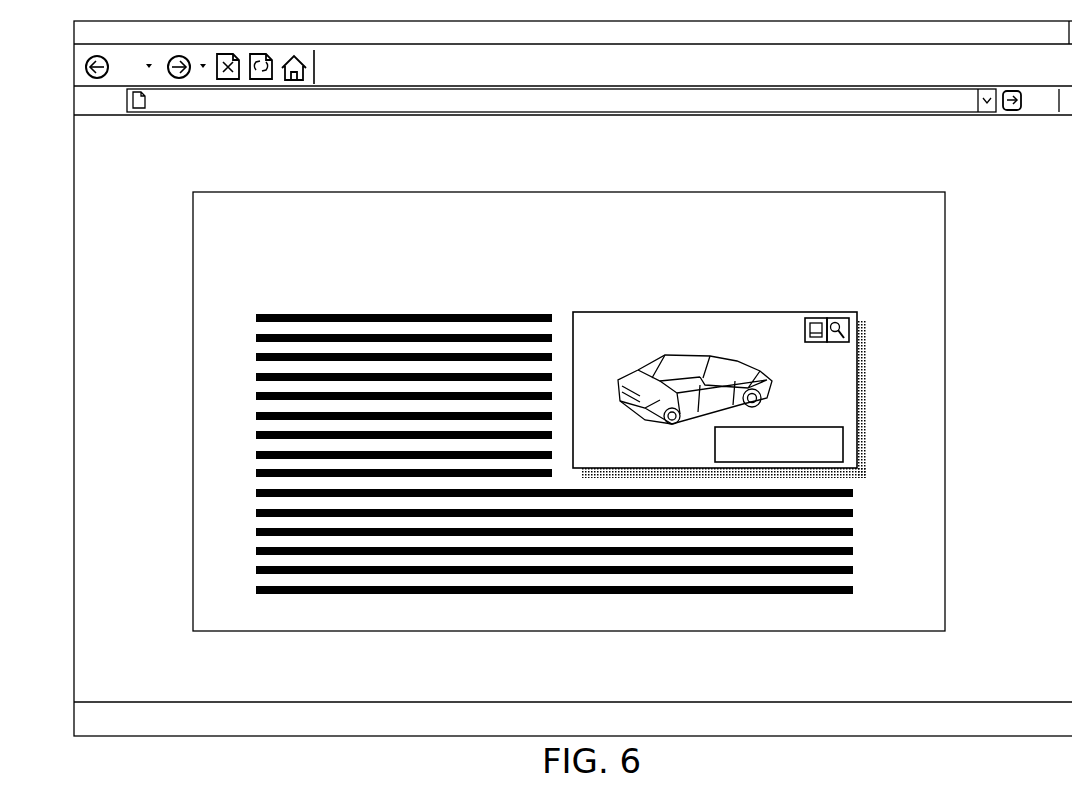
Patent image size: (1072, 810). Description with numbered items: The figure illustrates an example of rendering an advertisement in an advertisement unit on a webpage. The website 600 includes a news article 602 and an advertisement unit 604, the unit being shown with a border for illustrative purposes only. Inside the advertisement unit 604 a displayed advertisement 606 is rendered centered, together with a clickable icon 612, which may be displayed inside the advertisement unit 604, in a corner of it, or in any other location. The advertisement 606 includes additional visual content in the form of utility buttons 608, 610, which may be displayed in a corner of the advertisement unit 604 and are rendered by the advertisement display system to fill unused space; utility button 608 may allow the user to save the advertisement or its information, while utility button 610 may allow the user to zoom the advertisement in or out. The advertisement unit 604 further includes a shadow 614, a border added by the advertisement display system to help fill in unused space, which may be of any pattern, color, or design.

The website 600 is at (310, 748).
The news article 602 is at (205, 208).
The advertisement unit 604 is at (661, 312).
The displayed advertisement 606 is at (790, 375).
The utility button 608 is at (808, 318).
The utility button 610 is at (843, 318).
The clickable icon 612 is at (836, 433).
The shadow 614 is at (866, 465).